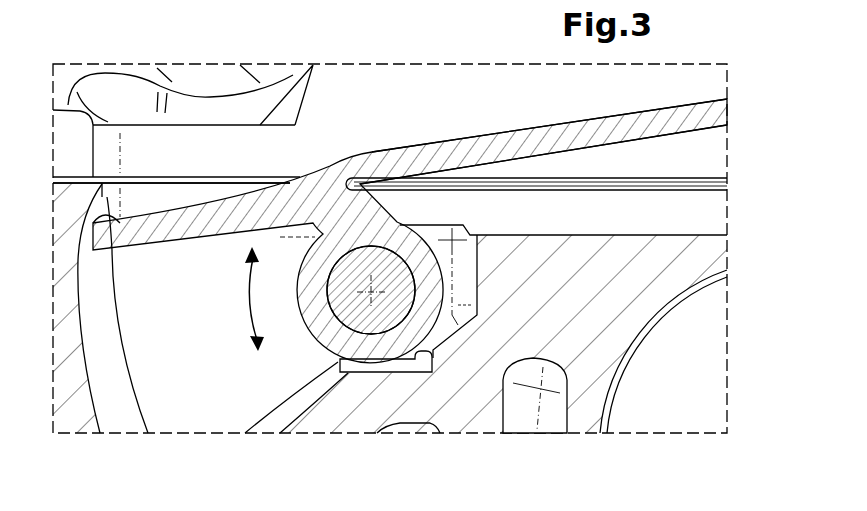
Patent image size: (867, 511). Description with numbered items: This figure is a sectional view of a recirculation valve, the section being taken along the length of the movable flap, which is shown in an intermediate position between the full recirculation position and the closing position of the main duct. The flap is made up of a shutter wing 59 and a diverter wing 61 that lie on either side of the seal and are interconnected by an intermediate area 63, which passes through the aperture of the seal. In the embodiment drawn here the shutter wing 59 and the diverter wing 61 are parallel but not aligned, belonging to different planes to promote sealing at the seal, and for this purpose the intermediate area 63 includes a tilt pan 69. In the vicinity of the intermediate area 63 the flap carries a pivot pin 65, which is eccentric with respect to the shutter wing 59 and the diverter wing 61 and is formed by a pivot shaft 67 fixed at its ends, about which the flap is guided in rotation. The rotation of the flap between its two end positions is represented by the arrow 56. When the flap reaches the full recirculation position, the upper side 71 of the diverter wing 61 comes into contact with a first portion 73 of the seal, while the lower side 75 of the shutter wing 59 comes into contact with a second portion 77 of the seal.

The arrow 56 is at (247, 307).
The shutter wing 59 is at (518, 143).
The diverter wing 61 is at (240, 212).
The intermediate area 63 is at (343, 213).
The pivot pin 65 is at (340, 307).
The pivot shaft 67 is at (392, 275).
The tilt pan 69 is at (318, 167).
The upper side 71 is at (198, 207).
The first portion 73 is at (148, 196).
The lower side 75 is at (683, 135).
The second portion 77 is at (697, 192).